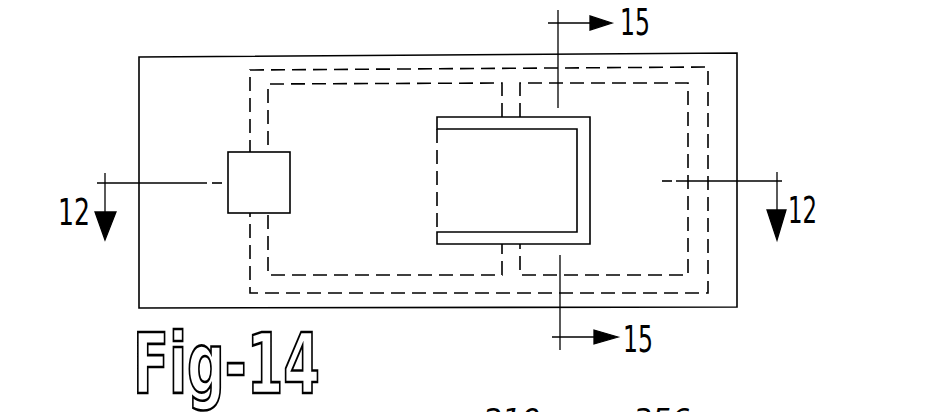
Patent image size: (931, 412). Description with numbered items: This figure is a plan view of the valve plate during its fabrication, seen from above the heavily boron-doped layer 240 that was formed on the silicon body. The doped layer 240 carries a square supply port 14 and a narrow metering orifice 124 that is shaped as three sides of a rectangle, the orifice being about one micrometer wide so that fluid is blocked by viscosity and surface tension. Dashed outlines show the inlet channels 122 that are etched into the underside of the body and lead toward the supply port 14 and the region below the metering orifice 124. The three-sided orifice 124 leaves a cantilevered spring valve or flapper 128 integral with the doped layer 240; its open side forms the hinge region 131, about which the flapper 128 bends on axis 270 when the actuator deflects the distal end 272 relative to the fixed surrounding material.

The supply port 14 is at (245, 175).
The inlet channels 122 is at (665, 75).
The metering orifice 124 is at (447, 120).
The cantilevered spring valve or flapper 128 is at (493, 160).
The opening 131 is at (455, 200).
The doped layer 240 is at (348, 240).
The axis 270 is at (436, 167).
The distal end 272 is at (565, 222).